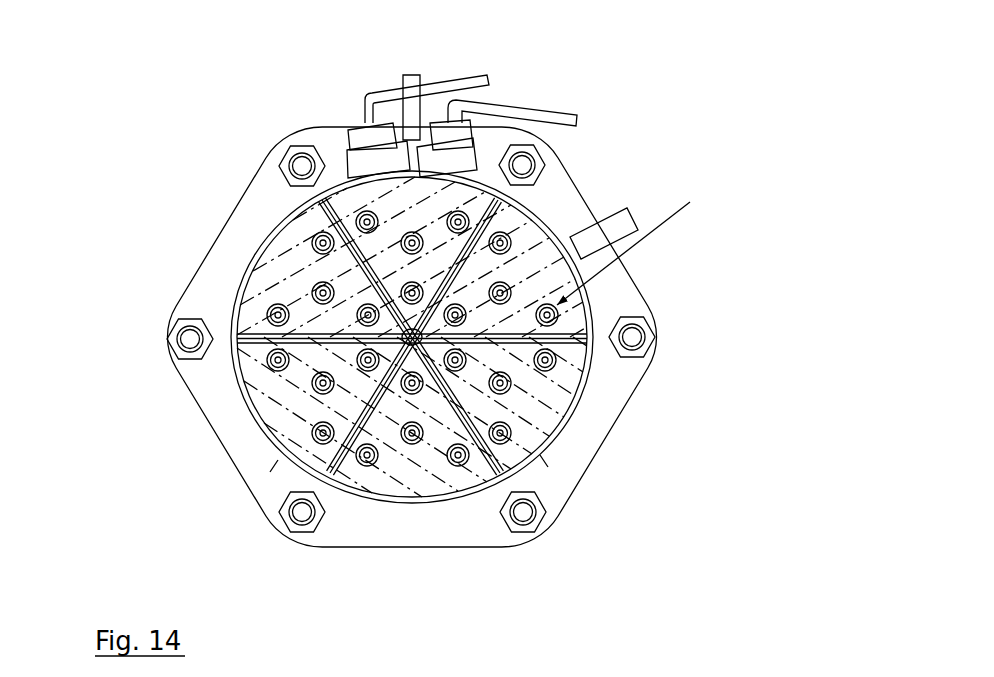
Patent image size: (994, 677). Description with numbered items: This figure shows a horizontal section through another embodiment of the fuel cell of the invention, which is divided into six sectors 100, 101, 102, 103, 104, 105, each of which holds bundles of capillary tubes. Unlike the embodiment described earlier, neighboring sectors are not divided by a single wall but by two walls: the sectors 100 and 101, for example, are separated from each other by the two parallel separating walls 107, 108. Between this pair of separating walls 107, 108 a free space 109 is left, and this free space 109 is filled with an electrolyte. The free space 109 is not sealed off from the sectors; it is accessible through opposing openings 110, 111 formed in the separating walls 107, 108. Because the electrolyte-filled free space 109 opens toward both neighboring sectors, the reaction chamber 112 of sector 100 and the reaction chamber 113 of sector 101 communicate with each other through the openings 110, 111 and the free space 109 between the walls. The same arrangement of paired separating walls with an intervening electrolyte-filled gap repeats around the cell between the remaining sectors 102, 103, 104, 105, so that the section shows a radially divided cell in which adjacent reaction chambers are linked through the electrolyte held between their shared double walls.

The sector 100 is at (255, 431).
The sector 101 is at (420, 512).
The sector 102 is at (575, 428).
The sector 103 is at (553, 222).
The sector 104 is at (343, 183).
The sector 105 is at (250, 255).
The separating wall 107 is at (330, 470).
The separating wall 108 is at (363, 497).
The free space 109 is at (330, 466).
The opening 110 is at (340, 412).
The opening 111 is at (345, 410).
The reaction chamber 112 is at (252, 375).
The reaction chamber 113 is at (392, 497).